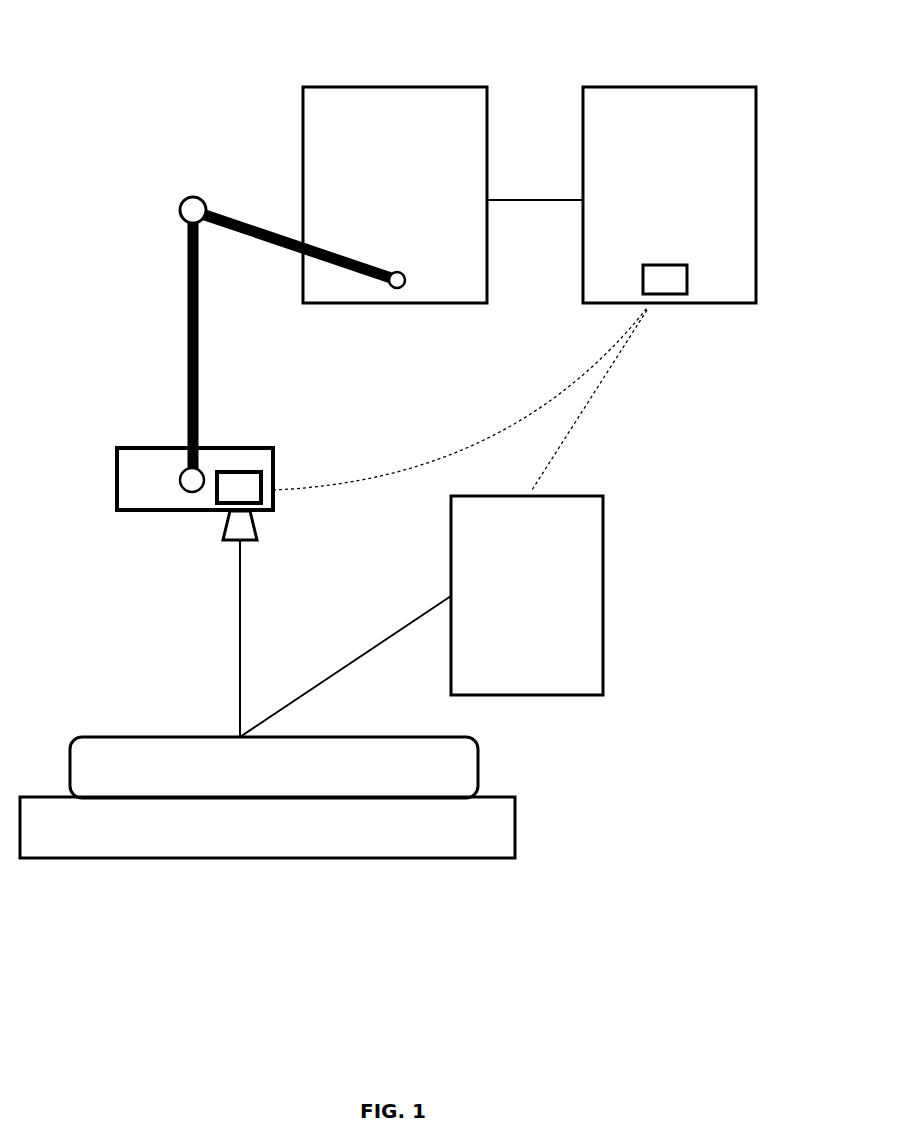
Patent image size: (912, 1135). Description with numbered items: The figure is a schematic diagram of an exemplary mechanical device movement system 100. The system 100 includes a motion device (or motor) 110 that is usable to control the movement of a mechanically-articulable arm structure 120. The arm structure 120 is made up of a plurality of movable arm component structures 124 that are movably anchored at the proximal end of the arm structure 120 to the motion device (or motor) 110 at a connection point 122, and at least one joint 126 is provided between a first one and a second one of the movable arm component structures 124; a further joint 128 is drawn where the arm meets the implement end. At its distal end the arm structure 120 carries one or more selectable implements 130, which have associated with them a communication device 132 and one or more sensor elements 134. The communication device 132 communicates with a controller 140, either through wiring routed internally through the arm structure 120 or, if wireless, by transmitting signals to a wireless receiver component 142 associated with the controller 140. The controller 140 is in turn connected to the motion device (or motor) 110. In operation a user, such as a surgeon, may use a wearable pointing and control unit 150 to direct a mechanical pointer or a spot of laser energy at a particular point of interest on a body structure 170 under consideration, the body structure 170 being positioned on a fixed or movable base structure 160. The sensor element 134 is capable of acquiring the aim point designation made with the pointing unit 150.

The mechanical device movement system 100 is at (94, 32).
The motion device (or motor) 110 is at (395, 195).
The mechanically-articulable arm structure 120 is at (249, 333).
The connection point 122 is at (397, 288).
The movable arm component structures 124 is at (262, 238).
The joint 126 is at (197, 212).
The end joint 128 is at (186, 473).
The selectable implements 130 is at (147, 480).
The communication device 132 is at (268, 504).
The sensor element 134 is at (237, 518).
The controller 140 is at (669, 195).
The wireless receiver component 142 is at (674, 280).
The wearable pointing and control unit 150 is at (527, 595).
The base structure 160 is at (267, 827).
The body structure 170 is at (274, 767).